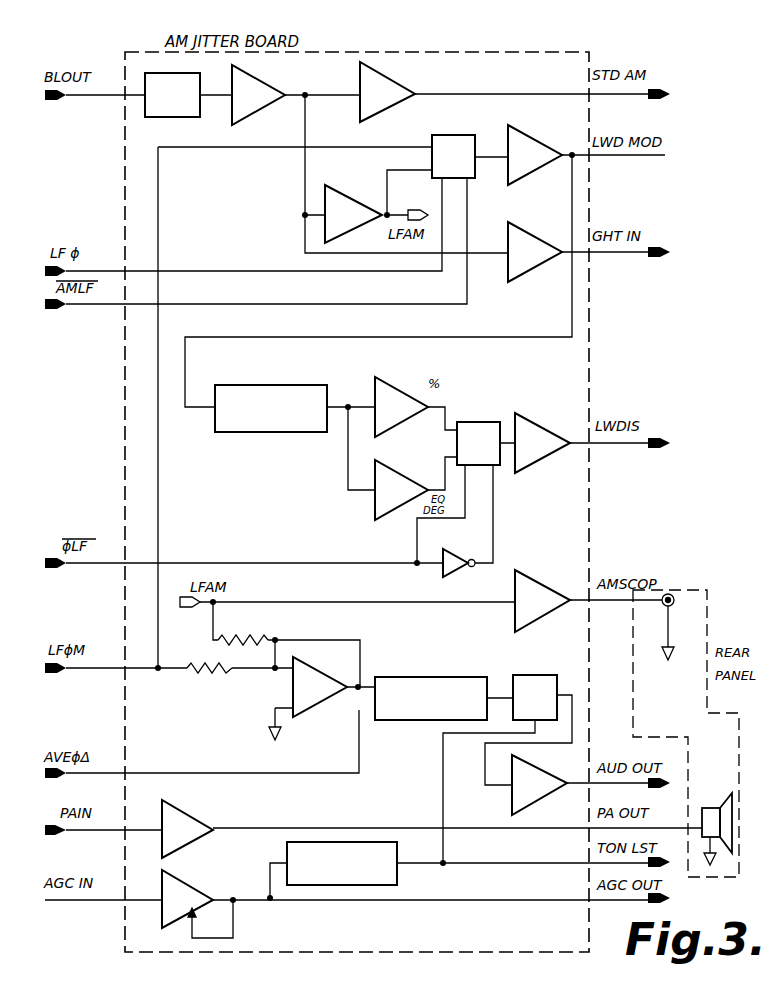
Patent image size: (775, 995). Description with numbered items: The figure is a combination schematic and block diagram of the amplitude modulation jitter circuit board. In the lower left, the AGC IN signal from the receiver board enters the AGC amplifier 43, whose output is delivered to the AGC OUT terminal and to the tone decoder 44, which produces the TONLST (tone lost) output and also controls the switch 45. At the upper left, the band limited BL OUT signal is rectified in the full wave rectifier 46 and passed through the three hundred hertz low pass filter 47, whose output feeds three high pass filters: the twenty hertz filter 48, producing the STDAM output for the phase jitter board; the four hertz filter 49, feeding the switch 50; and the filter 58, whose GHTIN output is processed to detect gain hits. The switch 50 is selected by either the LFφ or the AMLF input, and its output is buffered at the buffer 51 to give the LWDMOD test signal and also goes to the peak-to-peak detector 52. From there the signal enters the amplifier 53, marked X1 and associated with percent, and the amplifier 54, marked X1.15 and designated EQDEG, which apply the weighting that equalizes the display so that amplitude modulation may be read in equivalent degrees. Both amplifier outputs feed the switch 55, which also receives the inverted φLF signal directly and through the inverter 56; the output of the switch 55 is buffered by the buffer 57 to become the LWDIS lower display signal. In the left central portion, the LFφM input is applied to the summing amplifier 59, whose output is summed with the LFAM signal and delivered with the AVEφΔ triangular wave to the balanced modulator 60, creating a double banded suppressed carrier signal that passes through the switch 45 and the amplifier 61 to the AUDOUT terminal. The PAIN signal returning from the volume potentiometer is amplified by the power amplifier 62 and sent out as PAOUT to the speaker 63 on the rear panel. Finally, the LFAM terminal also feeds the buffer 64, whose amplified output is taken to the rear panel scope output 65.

The AGC amplifier 43 is at (185, 876).
The tone decoder 44 is at (287, 848).
The switch 45 is at (548, 664).
The full wave rectifier 46 is at (185, 117).
The low pass filter 47 is at (253, 115).
The high pass filter 48 is at (393, 84).
The high pass filter 49 is at (350, 197).
The switch 50 is at (470, 135).
The buffer 51 is at (524, 130).
The peak-to-peak detector 52 is at (255, 385).
The amplifier 53 is at (392, 382).
The amplifier 54 is at (394, 465).
The switch 55 is at (467, 422).
The inverter 56 is at (449, 553).
The buffer 57 is at (532, 418).
The high pass filter 58 is at (524, 228).
The summing amplifier 59 is at (318, 675).
The balanced modulator 60 is at (418, 720).
The amplifier 61 is at (536, 810).
The power amplifier 62 is at (195, 806).
The speaker 63 is at (727, 797).
The buffer 64 is at (532, 578).
The scope output 65 is at (674, 594).